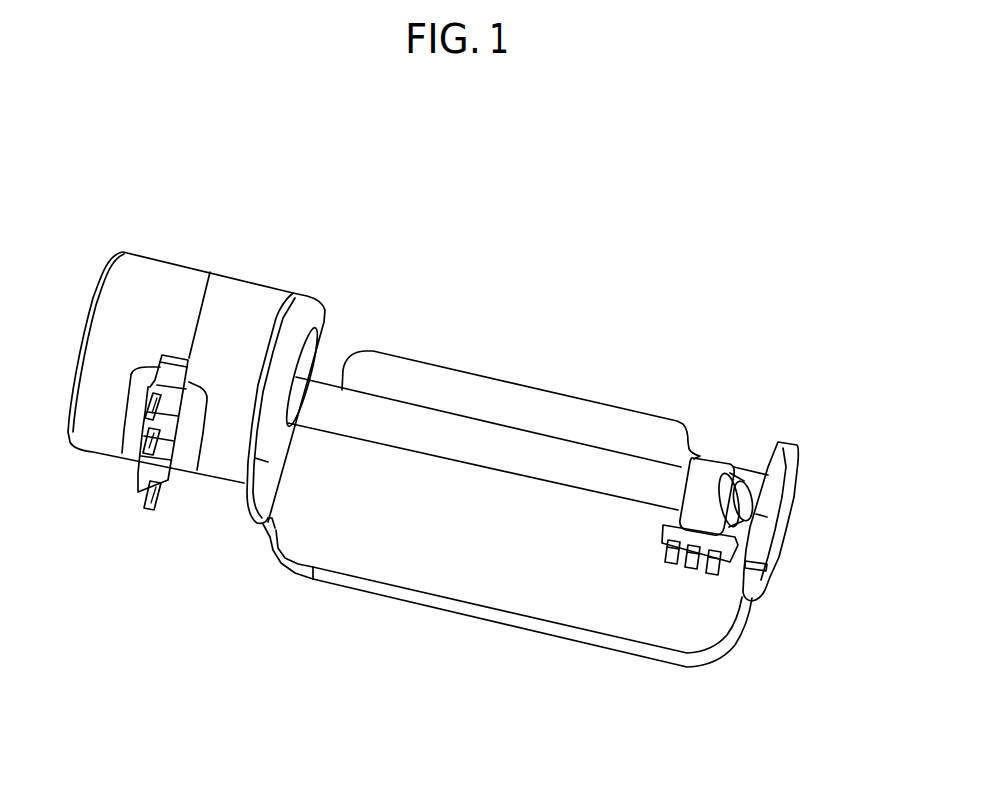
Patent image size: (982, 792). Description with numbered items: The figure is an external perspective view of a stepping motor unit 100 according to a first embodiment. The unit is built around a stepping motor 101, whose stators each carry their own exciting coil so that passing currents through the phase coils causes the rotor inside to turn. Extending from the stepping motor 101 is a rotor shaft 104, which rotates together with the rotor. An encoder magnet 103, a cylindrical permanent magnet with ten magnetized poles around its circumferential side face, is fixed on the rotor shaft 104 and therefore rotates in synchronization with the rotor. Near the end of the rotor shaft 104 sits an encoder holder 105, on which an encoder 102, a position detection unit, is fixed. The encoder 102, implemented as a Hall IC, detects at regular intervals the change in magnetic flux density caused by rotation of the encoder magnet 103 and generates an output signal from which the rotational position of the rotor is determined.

The stepping motor unit 100 is at (547, 162).
The stepping motor 101 is at (212, 462).
The encoder 102 is at (714, 576).
The encoder magnet 103 is at (683, 484).
The rotor shaft 104 is at (411, 437).
The encoder holder 105 is at (535, 600).